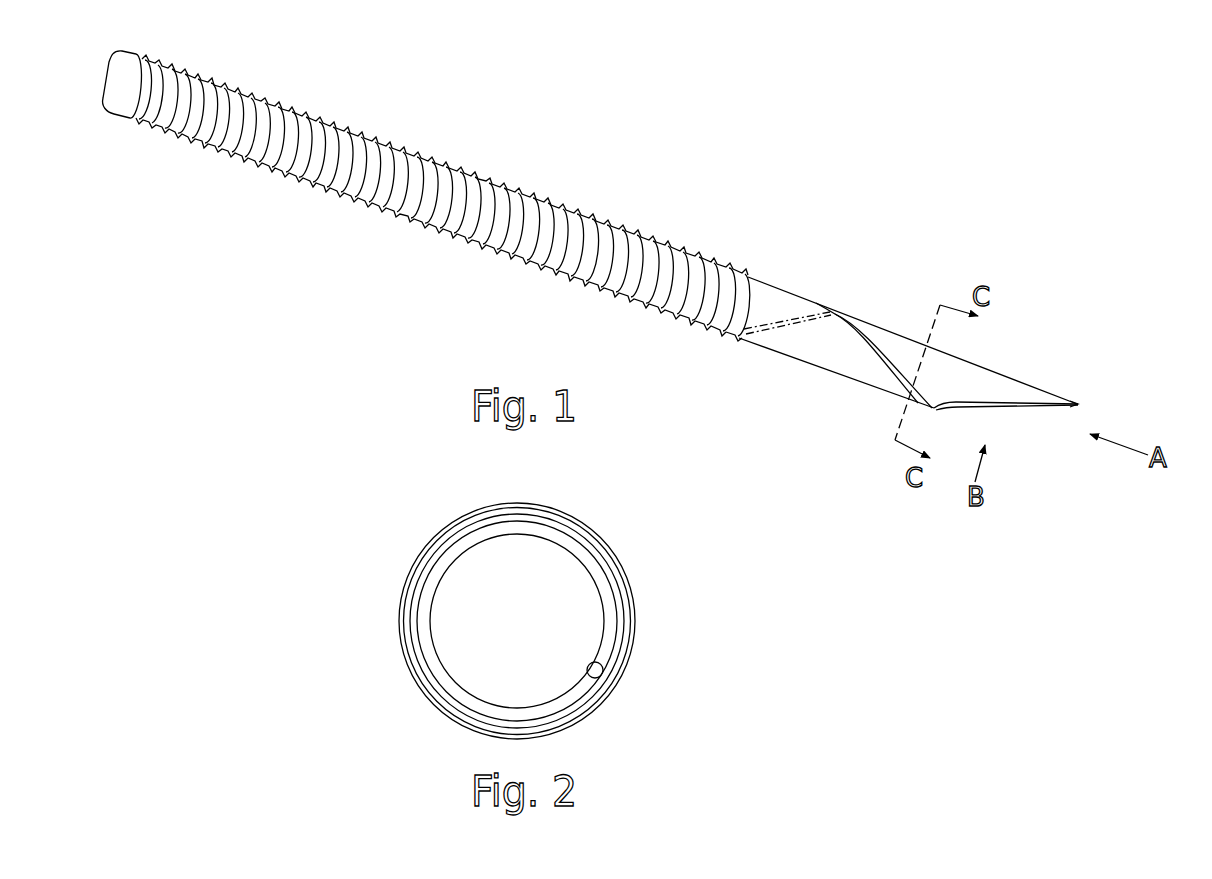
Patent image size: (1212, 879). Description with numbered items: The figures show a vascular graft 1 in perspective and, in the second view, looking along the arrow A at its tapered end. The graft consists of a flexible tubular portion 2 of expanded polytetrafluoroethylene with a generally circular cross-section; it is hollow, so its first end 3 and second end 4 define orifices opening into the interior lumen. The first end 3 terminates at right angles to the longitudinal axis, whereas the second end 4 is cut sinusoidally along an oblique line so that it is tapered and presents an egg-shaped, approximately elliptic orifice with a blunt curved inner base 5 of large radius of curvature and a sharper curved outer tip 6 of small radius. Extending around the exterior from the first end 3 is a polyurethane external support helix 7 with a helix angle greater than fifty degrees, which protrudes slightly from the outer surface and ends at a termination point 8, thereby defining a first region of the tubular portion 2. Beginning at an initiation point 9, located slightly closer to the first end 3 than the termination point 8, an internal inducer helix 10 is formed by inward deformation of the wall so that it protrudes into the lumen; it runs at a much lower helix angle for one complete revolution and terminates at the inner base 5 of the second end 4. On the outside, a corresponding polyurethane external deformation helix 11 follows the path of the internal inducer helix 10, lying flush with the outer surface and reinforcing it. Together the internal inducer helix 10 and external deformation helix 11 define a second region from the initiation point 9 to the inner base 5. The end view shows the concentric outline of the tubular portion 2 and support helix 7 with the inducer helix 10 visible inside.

In FIG. 1, the vascular graft 1 is at (587, 266).
In FIG. 2, the vascular graft 1 is at (525, 604).
In FIG. 1, the tubular portion 2 is at (740, 340).
In FIG. 2, the tubular portion 2 is at (622, 586).
In FIG. 1, the first end 3 is at (100, 79).
In FIG. 1, the second end 4 is at (1028, 424).
In FIG. 1, the inner base 5 is at (940, 412).
In FIG. 1, the outer tip 6 is at (1082, 404).
In FIG. 1, the external support helix 7 is at (134, 127).
In FIG. 2, the external support helix 7 is at (402, 643).
In FIG. 1, the termination point 8 is at (738, 337).
In FIG. 1, the initiation point 9 is at (724, 330).
In FIG. 1, the internal inducer helix 10 is at (777, 318).
In FIG. 2, the internal inducer helix 10 is at (605, 643).
In FIG. 1, the external deformation helix 11 is at (877, 328).